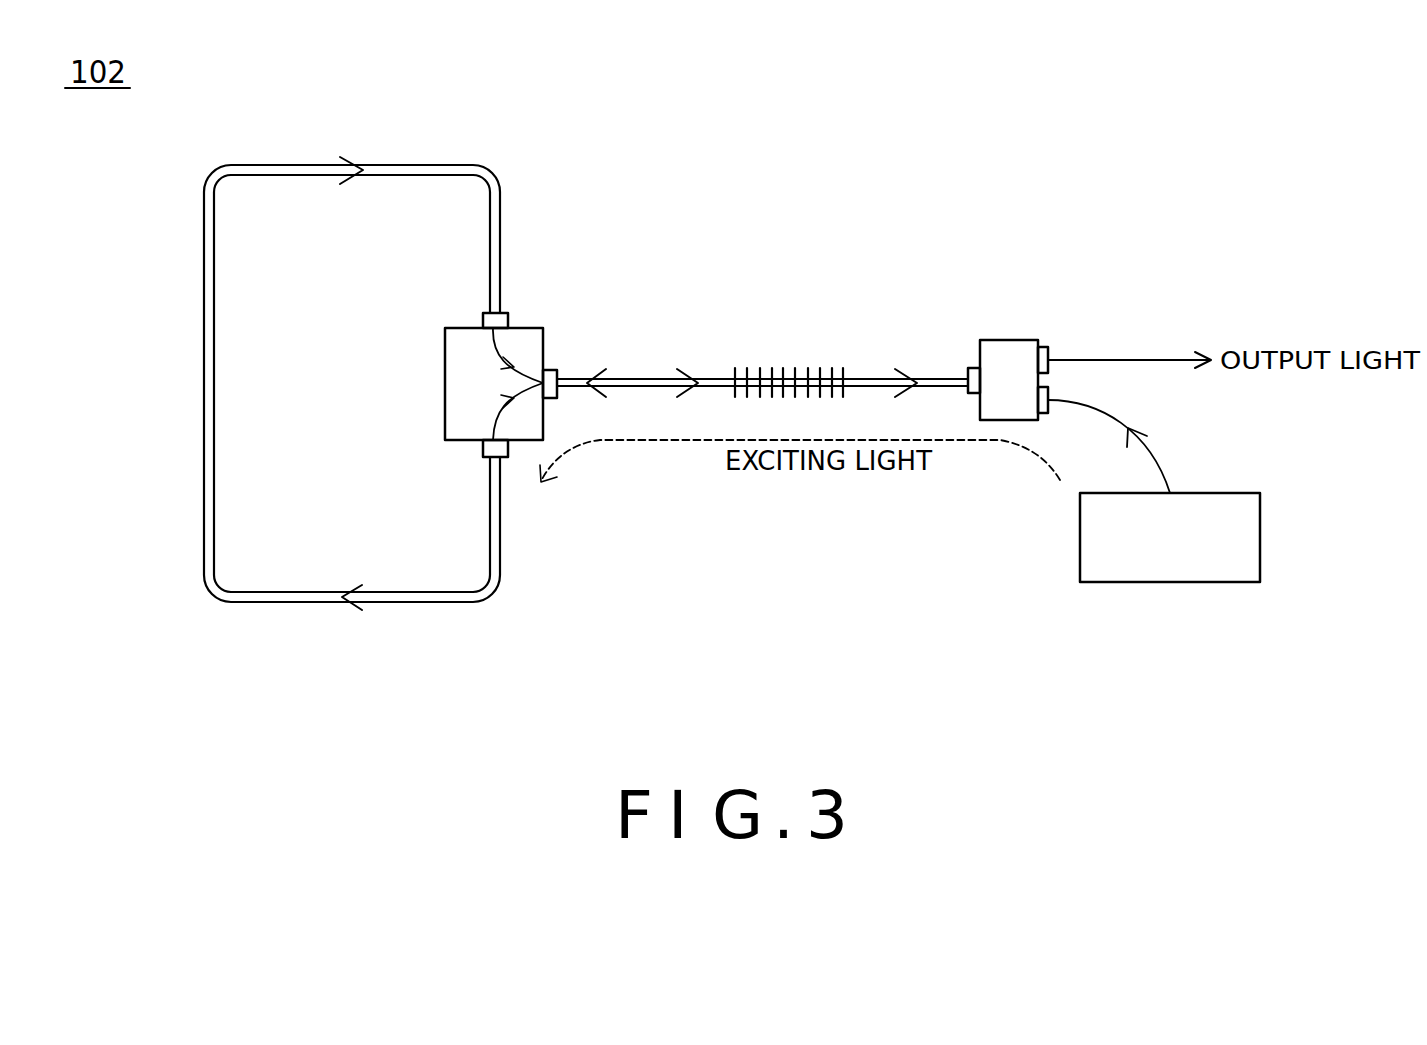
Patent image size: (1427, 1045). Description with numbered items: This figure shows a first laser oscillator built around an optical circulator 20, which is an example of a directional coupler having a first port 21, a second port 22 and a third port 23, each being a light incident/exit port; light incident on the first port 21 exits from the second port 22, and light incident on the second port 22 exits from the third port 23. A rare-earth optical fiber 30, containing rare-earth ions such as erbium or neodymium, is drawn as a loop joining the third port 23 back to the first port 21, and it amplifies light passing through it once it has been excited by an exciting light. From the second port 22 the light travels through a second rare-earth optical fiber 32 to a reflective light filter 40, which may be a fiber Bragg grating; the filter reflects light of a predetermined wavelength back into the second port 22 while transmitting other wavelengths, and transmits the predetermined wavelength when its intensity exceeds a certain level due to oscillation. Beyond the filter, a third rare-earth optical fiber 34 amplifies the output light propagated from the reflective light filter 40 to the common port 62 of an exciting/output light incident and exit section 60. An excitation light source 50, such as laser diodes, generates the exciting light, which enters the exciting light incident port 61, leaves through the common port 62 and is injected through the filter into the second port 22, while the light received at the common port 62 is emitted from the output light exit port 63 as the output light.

The rare-earth optical fiber 30 is at (204, 386).
The optical circulator 20 is at (527, 302).
The first port 21 is at (488, 313).
The second port 22 is at (553, 370).
The third port 23 is at (488, 462).
The second rare-earth optical fiber 32 is at (659, 376).
The third rare-earth optical fiber 34 is at (865, 372).
The reflective light filter 40 is at (803, 366).
The exciting/output light incident and exit section 60 is at (1010, 325).
The exciting light incident port 61 is at (1049, 409).
The common port 62 is at (969, 366).
The output light exit port 63 is at (1046, 348).
The excitation light source 50 is at (1260, 535).